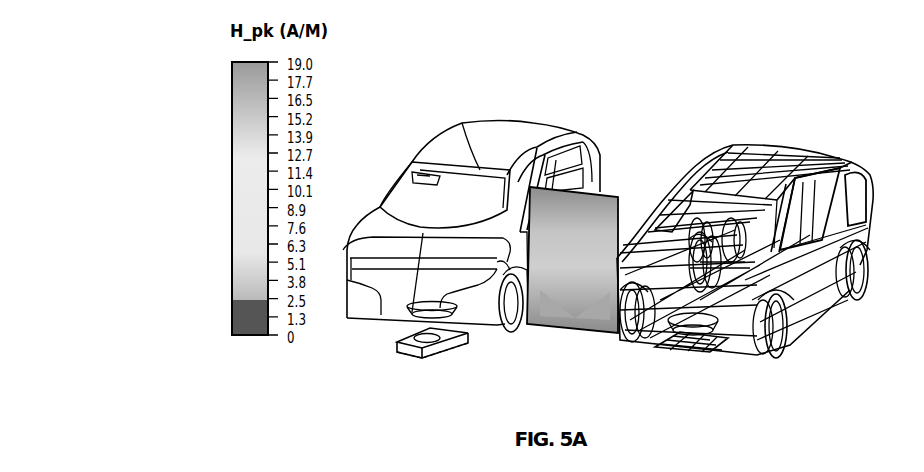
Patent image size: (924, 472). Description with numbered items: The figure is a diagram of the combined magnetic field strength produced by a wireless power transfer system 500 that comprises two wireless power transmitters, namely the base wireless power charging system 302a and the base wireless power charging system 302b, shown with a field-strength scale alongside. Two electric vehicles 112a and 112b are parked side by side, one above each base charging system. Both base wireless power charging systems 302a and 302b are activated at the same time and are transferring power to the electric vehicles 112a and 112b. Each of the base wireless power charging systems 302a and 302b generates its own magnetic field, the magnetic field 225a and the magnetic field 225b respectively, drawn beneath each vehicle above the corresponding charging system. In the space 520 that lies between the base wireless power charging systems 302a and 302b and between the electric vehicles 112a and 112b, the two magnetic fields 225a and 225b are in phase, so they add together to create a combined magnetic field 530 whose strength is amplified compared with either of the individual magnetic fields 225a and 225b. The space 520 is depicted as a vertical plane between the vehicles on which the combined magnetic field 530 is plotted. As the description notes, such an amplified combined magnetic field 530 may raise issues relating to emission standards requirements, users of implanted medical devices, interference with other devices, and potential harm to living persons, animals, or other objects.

The wireless power transfer system 500 is at (116, 44).
The electric vehicle 112a is at (429, 141).
The electric vehicle 112b is at (748, 150).
The magnetic field 225a is at (408, 302).
The magnetic field 225b is at (713, 350).
The base wireless power charging system 302a is at (397, 348).
The base wireless power charging system 302b is at (688, 353).
The space 520 is at (607, 192).
The combined magnetic field 530 is at (568, 322).